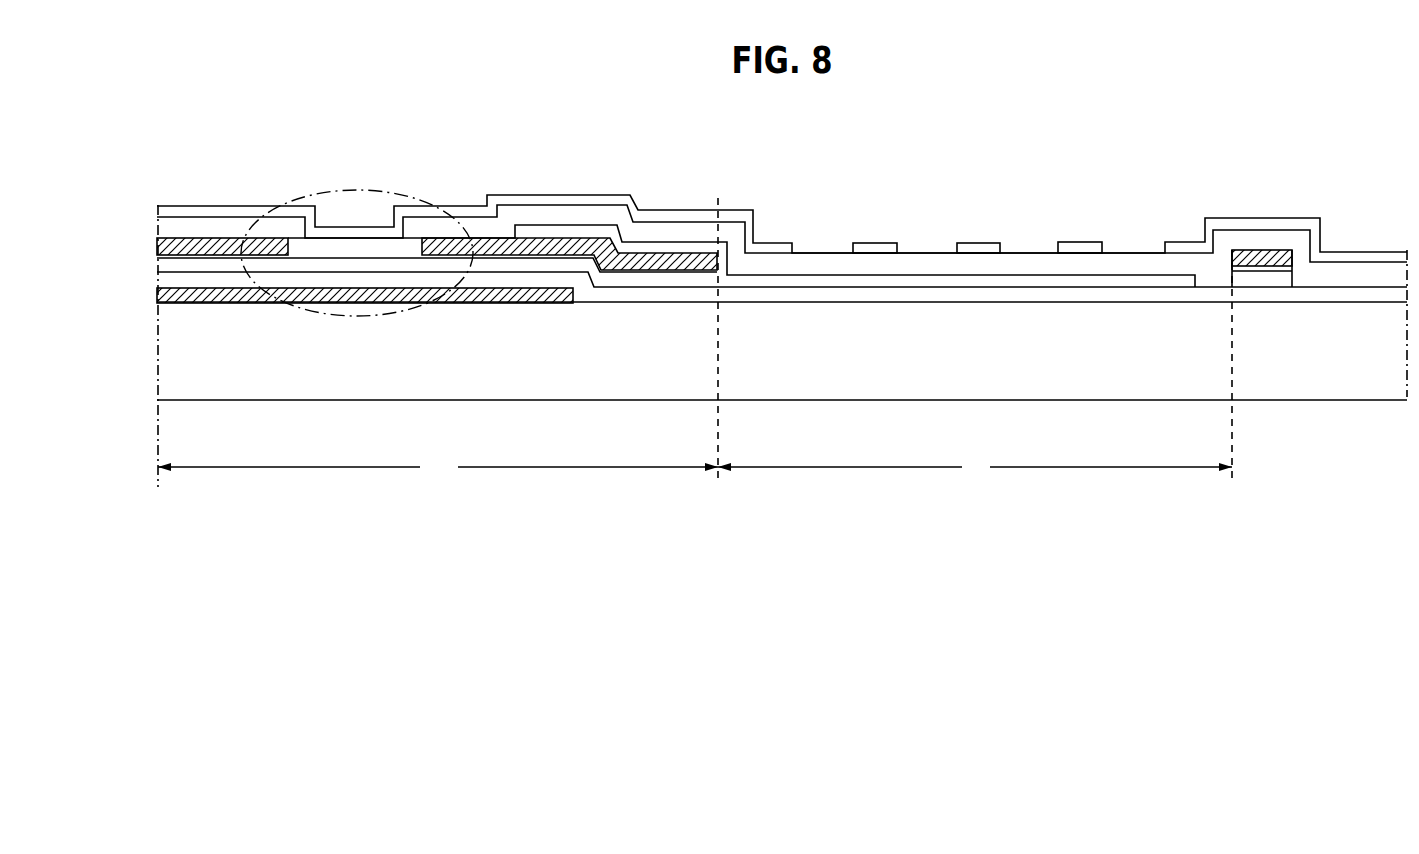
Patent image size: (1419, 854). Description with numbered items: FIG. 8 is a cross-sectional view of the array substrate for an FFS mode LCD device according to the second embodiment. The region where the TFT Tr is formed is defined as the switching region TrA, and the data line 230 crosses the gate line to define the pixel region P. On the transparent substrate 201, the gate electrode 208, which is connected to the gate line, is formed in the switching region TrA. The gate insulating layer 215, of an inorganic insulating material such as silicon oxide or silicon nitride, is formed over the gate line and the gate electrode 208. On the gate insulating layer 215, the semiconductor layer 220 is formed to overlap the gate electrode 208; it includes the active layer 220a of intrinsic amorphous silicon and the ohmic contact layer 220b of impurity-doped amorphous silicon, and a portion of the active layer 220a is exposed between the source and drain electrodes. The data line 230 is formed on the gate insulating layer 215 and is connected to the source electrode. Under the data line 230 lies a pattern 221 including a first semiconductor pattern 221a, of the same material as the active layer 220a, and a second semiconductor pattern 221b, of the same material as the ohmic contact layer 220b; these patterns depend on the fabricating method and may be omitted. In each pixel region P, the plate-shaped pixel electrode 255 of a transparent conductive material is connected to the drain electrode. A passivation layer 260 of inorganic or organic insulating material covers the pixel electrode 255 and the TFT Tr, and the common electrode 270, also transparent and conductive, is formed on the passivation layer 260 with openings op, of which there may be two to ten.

The substrate 201 is at (1359, 384).
The gate electrode 208 is at (355, 301).
The gate insulating layer 215 is at (775, 298).
The semiconductor layer 220 is at (437, 315).
The active layer 220a is at (515, 264).
The ohmic contact layer 220b is at (557, 257).
The pattern 221 is at (1278, 315).
The first semiconductor pattern 221a is at (1275, 268).
The second semiconductor pattern 221b is at (1247, 279).
The data line 230 is at (1278, 273).
The pixel electrode 255 is at (872, 281).
The passivation layer 260 is at (952, 268).
The common electrode 270 is at (692, 212).
The openings op is at (828, 233).
The TFT Tr is at (293, 314).
The switching region TrA is at (438, 468).
The pixel region P is at (975, 466).